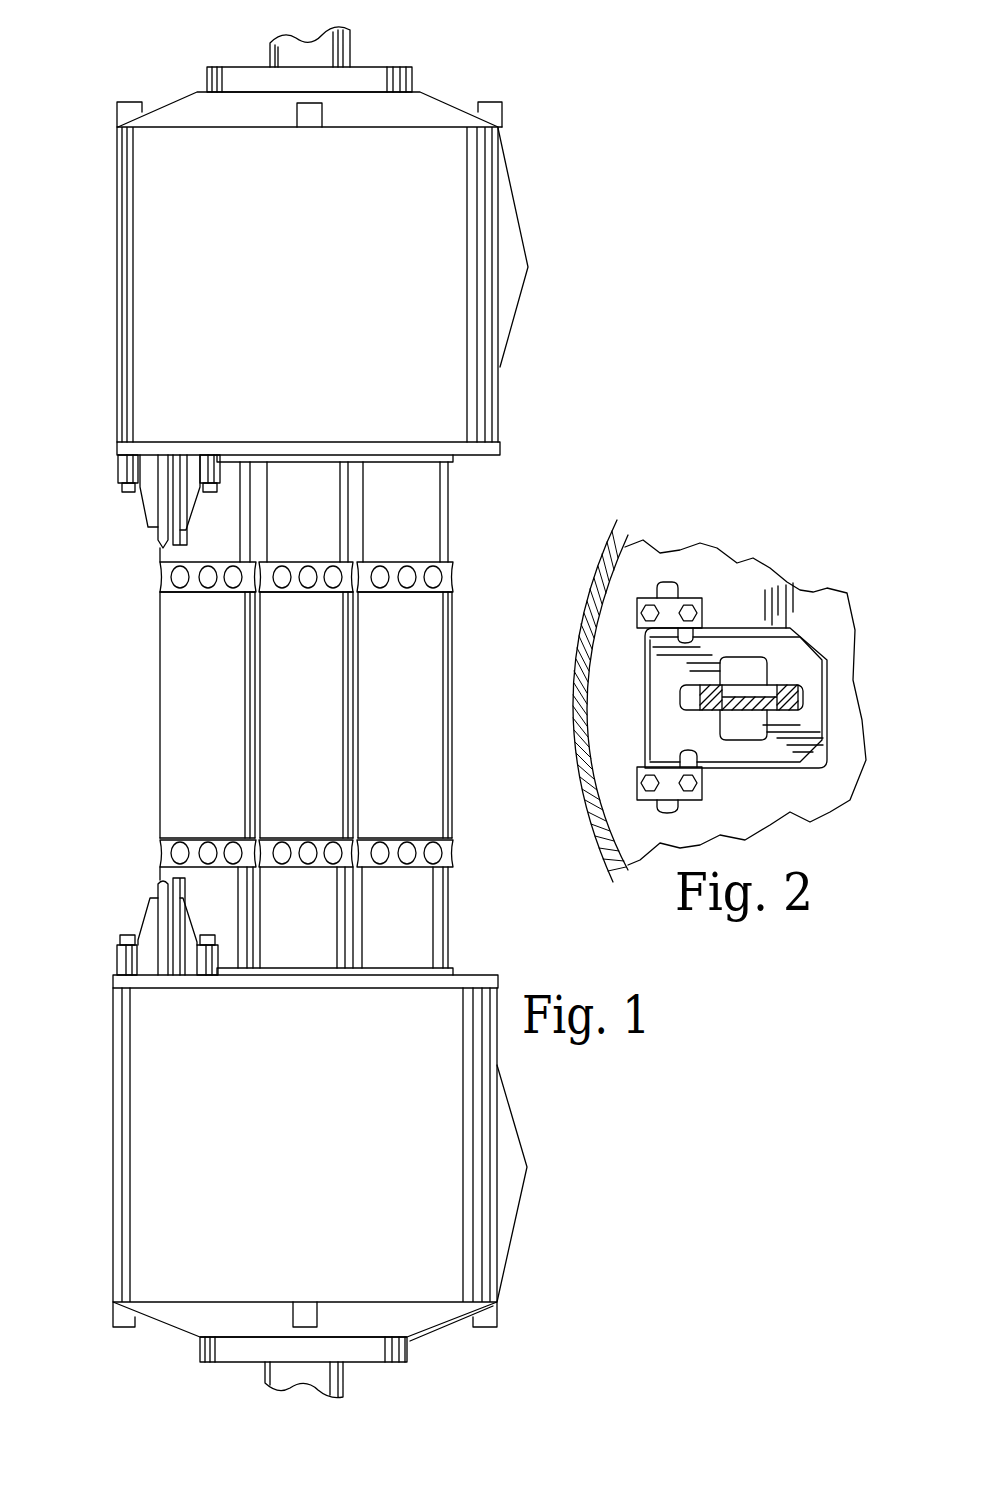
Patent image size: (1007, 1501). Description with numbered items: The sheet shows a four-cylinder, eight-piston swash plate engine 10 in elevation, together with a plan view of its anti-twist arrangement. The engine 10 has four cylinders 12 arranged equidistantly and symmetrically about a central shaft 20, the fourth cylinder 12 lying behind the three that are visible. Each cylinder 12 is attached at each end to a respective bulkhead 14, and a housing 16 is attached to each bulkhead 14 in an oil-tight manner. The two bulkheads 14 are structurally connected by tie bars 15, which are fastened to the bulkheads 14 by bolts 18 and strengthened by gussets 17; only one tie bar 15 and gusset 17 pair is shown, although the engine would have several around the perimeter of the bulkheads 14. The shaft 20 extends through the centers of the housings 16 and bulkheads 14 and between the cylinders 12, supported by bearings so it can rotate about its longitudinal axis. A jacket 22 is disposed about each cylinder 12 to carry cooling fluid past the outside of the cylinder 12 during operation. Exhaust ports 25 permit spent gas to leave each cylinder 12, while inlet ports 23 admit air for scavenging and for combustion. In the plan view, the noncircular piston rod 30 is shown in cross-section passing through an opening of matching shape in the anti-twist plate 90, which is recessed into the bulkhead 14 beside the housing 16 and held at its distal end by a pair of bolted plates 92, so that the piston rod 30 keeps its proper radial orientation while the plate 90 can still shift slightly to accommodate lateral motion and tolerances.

In FIG. 1, the swash plate engine 10 is at (97, 658).
In FIG. 1, the cylinder 12 is at (232, 478).
In FIG. 1, the bulkhead 14 is at (117, 452).
In FIG. 2, the bulkhead 14 is at (790, 800).
In FIG. 1, the tie bar 15 is at (157, 543).
In FIG. 1, the housing 16 is at (497, 427).
In FIG. 2, the housing 16 is at (590, 822).
In FIG. 1, the gusset 17 is at (148, 527).
In FIG. 1, the bolt 18 is at (127, 493).
In FIG. 1, the shaft 20 is at (350, 52).
In FIG. 1, the jacket 22 is at (168, 802).
In FIG. 1, the inlet port 23 is at (443, 852).
In FIG. 1, the exhaust port 25 is at (443, 582).
In FIG. 2, the piston rod 30 is at (747, 685).
In FIG. 2, the anti-twist plate 90 is at (842, 595).
In FIG. 2, the bolted plate 92 is at (703, 600).